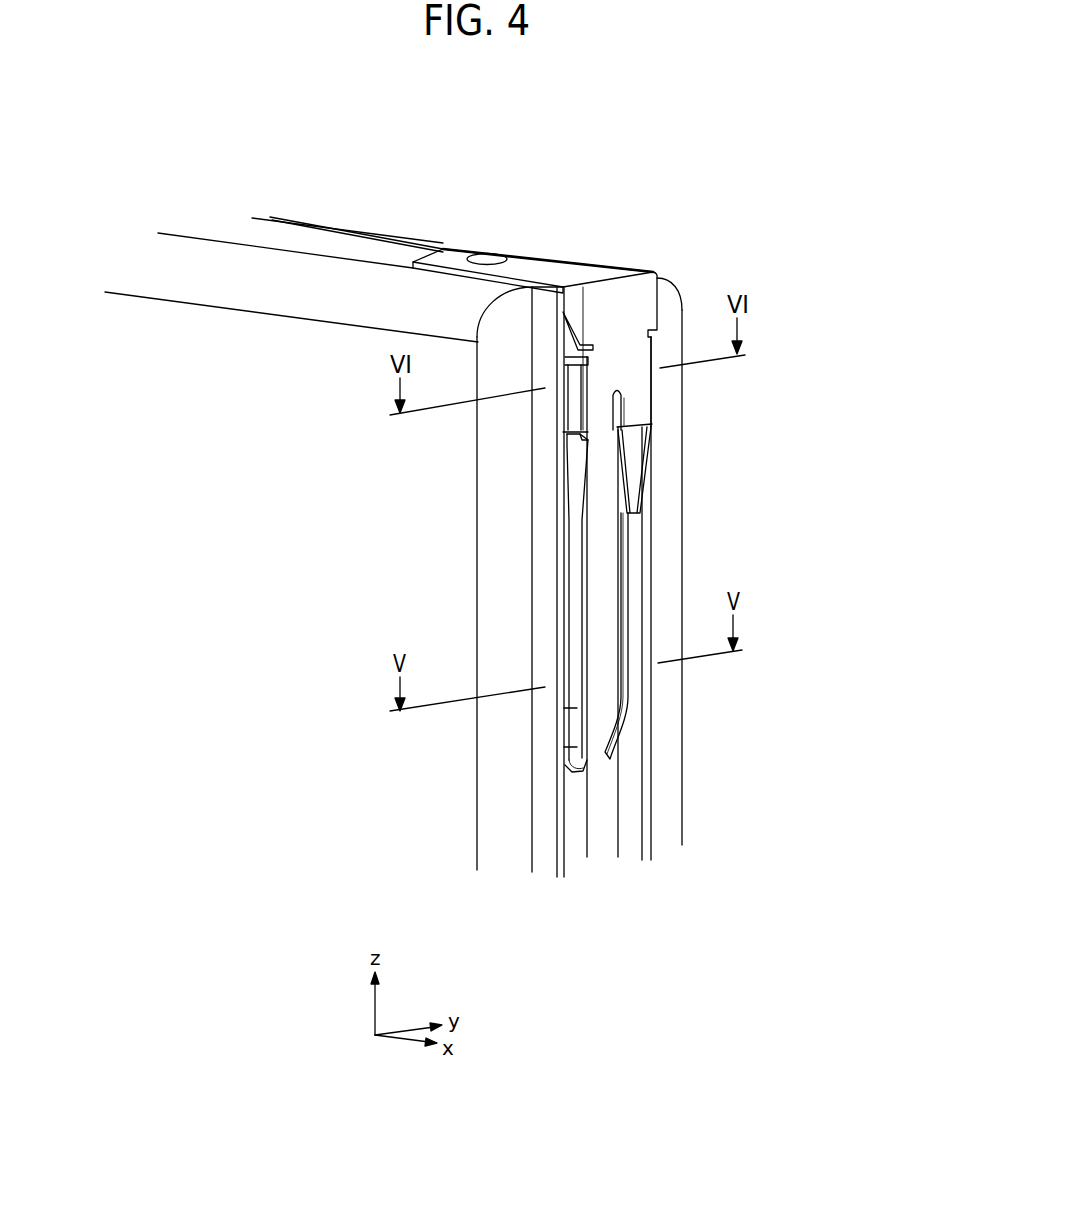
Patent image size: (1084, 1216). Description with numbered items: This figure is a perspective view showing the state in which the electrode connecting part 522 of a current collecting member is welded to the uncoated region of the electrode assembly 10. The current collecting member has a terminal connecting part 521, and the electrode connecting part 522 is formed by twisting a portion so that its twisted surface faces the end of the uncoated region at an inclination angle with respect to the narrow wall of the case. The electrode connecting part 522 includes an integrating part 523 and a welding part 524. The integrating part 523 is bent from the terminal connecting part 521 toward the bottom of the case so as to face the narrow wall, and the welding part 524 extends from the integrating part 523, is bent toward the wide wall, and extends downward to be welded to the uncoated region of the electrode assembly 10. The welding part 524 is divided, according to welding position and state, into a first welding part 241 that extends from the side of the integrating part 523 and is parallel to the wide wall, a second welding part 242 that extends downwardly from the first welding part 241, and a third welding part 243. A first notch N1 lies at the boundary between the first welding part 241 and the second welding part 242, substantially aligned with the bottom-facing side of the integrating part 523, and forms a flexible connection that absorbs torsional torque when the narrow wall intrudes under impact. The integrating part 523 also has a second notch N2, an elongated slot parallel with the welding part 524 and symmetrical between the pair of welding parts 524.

The electrode assembly 10 is at (502, 845).
The terminal connecting part 521 is at (545, 263).
The electrode connecting part 522 is at (598, 631).
The integrating part 523 is at (696, 566).
The welding part 524 is at (598, 631).
The first welding part 241 is at (573, 407).
The second welding part 242 is at (573, 486).
The third welding part 243 is at (573, 605).
The first notch N1 is at (570, 433).
The second notch N2 is at (627, 395).